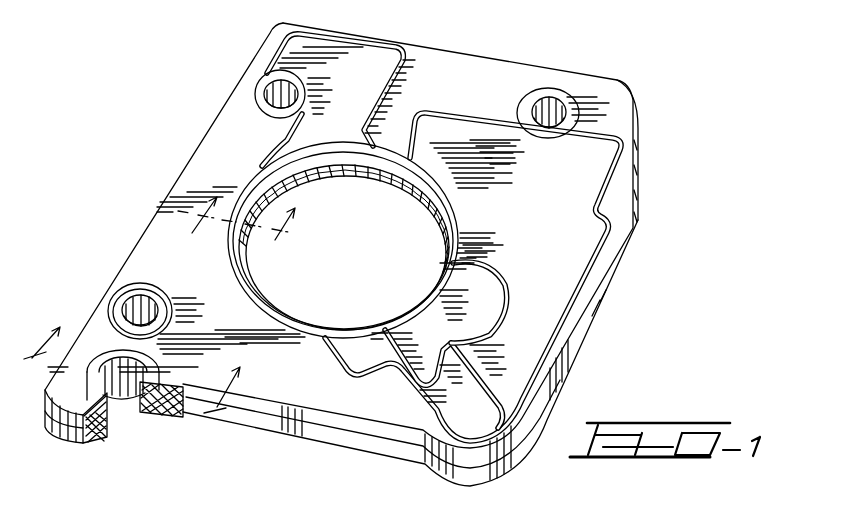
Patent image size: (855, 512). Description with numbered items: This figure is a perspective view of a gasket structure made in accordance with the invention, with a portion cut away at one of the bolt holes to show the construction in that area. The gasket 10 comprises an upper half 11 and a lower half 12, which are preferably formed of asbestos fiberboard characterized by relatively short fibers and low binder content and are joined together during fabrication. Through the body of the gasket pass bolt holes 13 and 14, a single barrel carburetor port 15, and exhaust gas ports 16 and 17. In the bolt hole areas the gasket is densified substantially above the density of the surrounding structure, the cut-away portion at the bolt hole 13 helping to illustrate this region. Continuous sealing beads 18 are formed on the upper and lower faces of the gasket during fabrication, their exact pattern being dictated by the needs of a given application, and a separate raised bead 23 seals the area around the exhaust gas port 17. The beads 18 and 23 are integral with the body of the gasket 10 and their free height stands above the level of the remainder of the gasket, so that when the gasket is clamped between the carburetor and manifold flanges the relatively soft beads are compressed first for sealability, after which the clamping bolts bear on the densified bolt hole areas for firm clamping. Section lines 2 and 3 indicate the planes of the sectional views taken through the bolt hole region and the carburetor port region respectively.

The gasket 10 is at (565, 60).
The upper half 11 is at (620, 231).
The lower half 12 is at (615, 268).
The bolt hole 13 is at (108, 362).
The bolt hole 14 is at (545, 108).
The single barrel carburetor port 15 is at (455, 216).
The exhaust gas port 16 is at (305, 78).
The exhaust gas port 17 is at (144, 304).
The continuous sealing bead 18 is at (503, 283).
The raised bead 23 is at (172, 316).
The section line 2- 2 is at (132, 384).
The section line 3- 3 is at (235, 227).